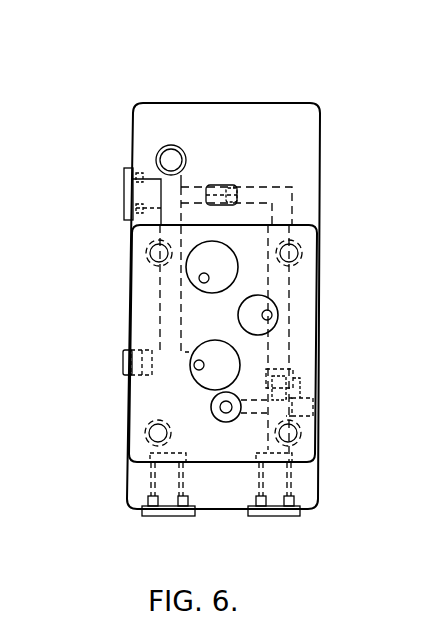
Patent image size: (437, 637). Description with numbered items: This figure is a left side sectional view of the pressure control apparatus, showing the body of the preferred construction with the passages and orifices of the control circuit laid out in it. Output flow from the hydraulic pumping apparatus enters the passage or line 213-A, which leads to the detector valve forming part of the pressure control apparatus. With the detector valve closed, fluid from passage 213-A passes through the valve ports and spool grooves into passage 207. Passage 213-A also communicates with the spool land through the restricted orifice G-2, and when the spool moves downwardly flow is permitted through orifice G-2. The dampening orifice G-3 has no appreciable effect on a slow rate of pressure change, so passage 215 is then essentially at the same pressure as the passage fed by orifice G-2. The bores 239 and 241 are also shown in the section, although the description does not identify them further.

The passage 215 is at (197, 185).
The dampening orifice G-3 is at (225, 180).
The bore 239 is at (203, 280).
The passage 241 is at (271, 311).
The passage 207 is at (200, 370).
The passage or line 213-A is at (220, 420).
The restricted orifice G-2 is at (290, 378).